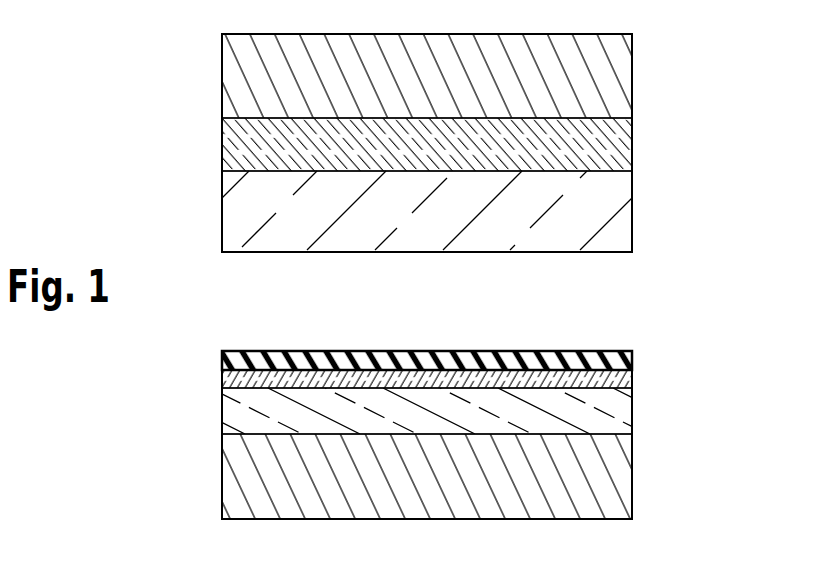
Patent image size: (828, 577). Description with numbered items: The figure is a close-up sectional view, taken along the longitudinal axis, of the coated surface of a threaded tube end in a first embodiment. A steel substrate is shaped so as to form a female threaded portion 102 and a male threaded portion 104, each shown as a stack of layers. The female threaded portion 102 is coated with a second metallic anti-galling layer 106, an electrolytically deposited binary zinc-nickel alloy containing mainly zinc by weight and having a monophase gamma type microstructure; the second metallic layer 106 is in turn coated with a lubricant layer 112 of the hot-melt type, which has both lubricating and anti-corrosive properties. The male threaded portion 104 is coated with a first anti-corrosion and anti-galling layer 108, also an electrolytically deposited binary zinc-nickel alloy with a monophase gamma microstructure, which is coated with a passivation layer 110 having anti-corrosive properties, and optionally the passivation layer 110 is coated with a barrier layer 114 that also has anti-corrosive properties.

The female threaded portion 102 is at (165, 123).
The male threaded portion 104 is at (181, 444).
The second metallic anti-galling layer 106 is at (623, 146).
The first anti-corrosion and anti-galling layer 108 is at (620, 422).
The passivation layer 110 is at (632, 378).
The lubricant layer 112 is at (623, 223).
The barrier layer 114 is at (630, 358).